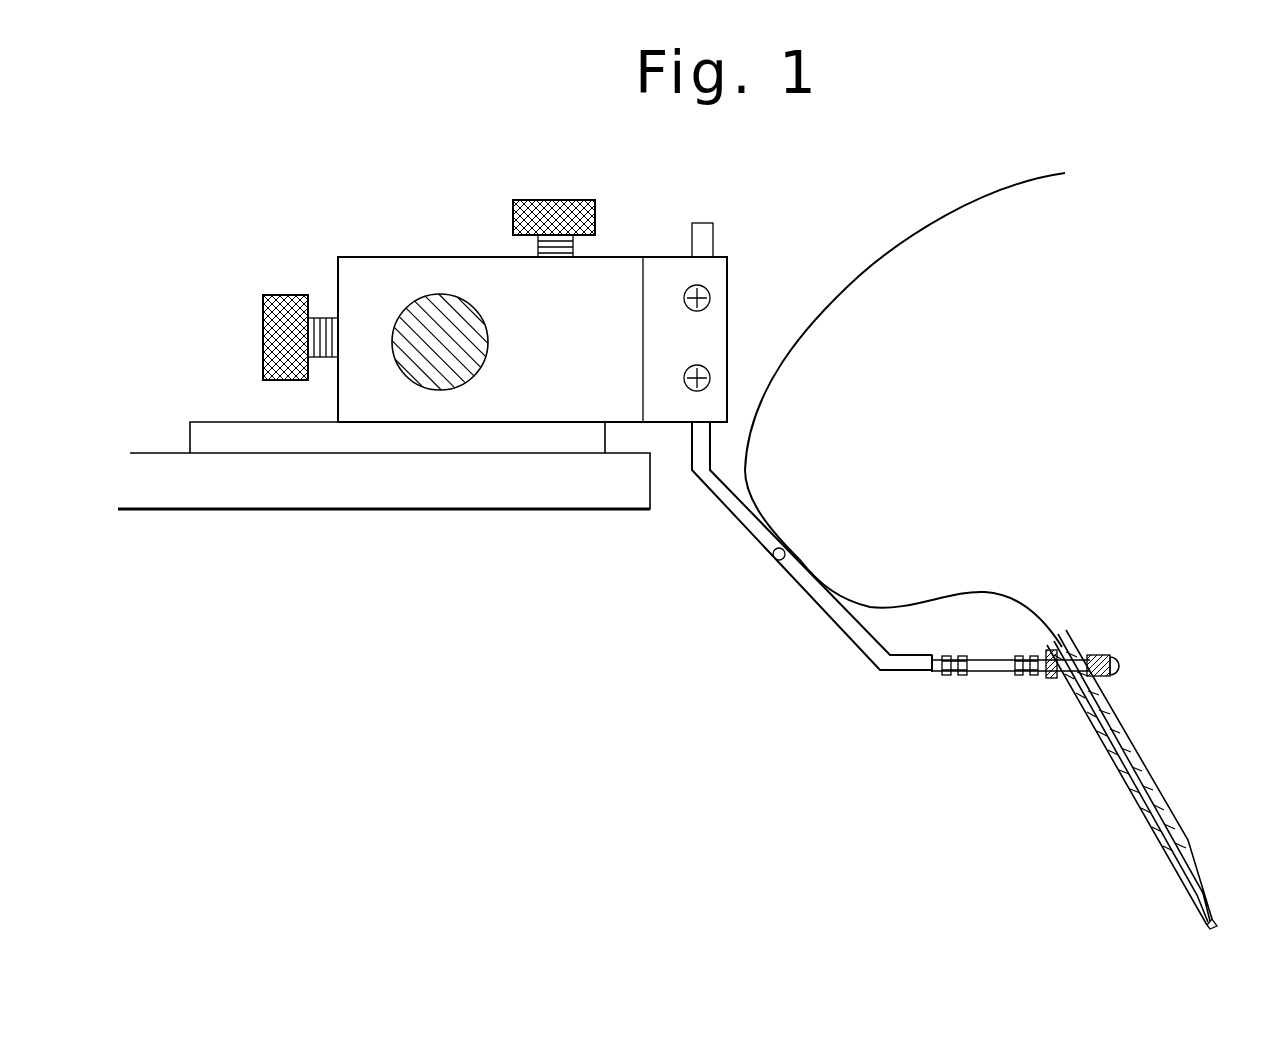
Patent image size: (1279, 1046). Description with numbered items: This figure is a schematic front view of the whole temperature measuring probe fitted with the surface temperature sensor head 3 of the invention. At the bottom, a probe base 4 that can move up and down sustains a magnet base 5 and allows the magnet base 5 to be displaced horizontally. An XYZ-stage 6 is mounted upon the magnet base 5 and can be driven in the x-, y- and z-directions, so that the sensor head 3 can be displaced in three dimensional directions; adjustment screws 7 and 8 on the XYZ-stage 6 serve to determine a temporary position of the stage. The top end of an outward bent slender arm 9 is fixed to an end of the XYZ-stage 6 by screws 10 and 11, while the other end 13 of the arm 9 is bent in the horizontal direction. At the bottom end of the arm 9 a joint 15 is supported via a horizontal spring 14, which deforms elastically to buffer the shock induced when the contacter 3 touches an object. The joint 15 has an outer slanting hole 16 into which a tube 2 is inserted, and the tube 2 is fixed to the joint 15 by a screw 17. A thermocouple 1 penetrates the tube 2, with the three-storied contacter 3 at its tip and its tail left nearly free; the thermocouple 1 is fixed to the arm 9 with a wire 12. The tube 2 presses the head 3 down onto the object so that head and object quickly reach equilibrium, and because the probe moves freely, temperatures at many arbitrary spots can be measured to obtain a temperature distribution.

The thermocouple 1 is at (866, 275).
The tube 2 is at (1142, 766).
The surface temperature sensor head 3 is at (1216, 926).
The probe base 4 is at (455, 485).
The magnet base 5 is at (320, 437).
The XYZ-stage 6 is at (452, 272).
The adjustment screw 7 is at (568, 204).
The adjustment screw 8 is at (263, 341).
The outward bent slender arm 9 is at (737, 512).
The screw 10 is at (711, 297).
The screw 11 is at (711, 377).
The wire 12 is at (775, 561).
The end of the arm 13 is at (896, 668).
The spring 14 is at (980, 666).
The joint 15 is at (1100, 656).
The slanting hole 16 is at (1063, 678).
The screw 17 is at (1122, 667).